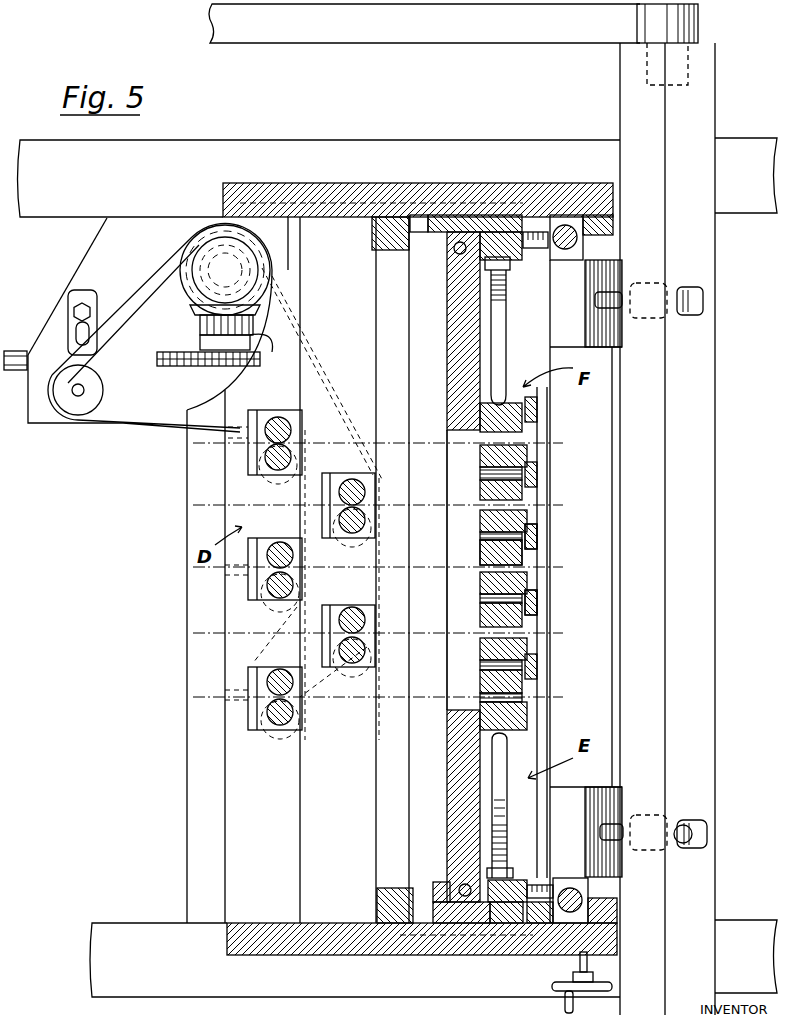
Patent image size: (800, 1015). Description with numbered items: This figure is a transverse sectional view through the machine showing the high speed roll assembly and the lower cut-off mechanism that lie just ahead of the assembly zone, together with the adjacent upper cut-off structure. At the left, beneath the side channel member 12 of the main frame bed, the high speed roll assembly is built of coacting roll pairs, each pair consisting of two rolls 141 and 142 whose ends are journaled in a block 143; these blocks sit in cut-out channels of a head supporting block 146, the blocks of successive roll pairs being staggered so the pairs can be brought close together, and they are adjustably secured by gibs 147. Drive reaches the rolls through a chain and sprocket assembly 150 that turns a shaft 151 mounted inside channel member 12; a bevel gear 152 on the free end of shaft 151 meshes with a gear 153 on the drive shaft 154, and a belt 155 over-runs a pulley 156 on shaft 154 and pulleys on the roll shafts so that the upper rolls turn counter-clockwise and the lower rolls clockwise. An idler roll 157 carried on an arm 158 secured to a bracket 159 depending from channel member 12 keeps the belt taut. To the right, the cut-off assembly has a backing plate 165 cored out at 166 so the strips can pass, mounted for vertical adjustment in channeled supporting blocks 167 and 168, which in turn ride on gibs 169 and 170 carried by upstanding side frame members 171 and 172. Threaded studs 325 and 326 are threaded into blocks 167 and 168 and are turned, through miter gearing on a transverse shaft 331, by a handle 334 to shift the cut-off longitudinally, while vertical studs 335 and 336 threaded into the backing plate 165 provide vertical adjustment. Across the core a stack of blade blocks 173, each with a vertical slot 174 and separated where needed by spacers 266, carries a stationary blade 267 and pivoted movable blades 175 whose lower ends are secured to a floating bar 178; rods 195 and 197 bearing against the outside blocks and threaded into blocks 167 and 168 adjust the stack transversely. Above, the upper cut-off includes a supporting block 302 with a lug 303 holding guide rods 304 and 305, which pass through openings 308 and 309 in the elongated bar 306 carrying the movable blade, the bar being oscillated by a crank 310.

The side channel member 12 is at (280, 153).
The roll 141 is at (283, 422).
The roll 142 is at (262, 455).
The block 143 is at (330, 492).
The head supporting block 146 is at (235, 775).
The gib 147 is at (258, 603).
The chain and sprocket assembly 150 is at (170, 364).
The shaft 151 is at (262, 345).
The bevel gear 152 is at (260, 310).
The gear 153 is at (282, 270).
The drive shaft 154 is at (190, 287).
The belt 155 is at (160, 425).
The pulley 156 is at (207, 236).
The idler roll 157 is at (78, 400).
The arm 158 is at (72, 325).
The bracket 159 is at (88, 263).
The backing plate 165 is at (452, 335).
The core 166 is at (456, 640).
The channeled supporting block 167 is at (476, 222).
The channeled supporting block 168 is at (485, 915).
The gib 169 is at (417, 216).
The gib 170 is at (378, 904).
The side frame member 171 is at (333, 196).
The side frame member 172 is at (303, 942).
The blade block 173 is at (480, 584).
The vertical slot 174 is at (480, 442).
The movable blade 175 is at (537, 600).
The floating bar 178 is at (540, 527).
The rod 195 is at (488, 266).
The rod 197 is at (505, 822).
The spacer 266 is at (480, 536).
The stationary blade 267 is at (527, 503).
The supporting block 302 is at (607, 708).
The lug 303 is at (578, 815).
The guide rod 304 is at (698, 828).
The guide rod 305 is at (703, 300).
The elongated bar 306 is at (708, 402).
The opening 308 is at (685, 818).
The opening 309 is at (680, 284).
The crank 310 is at (428, 33).
The threaded stud 325 is at (535, 250).
The threaded stud 326 is at (538, 882).
The shaft 331 is at (580, 957).
The handle 334 is at (612, 985).
The vertical stud 335 is at (445, 935).
The vertical stud 336 is at (454, 252).